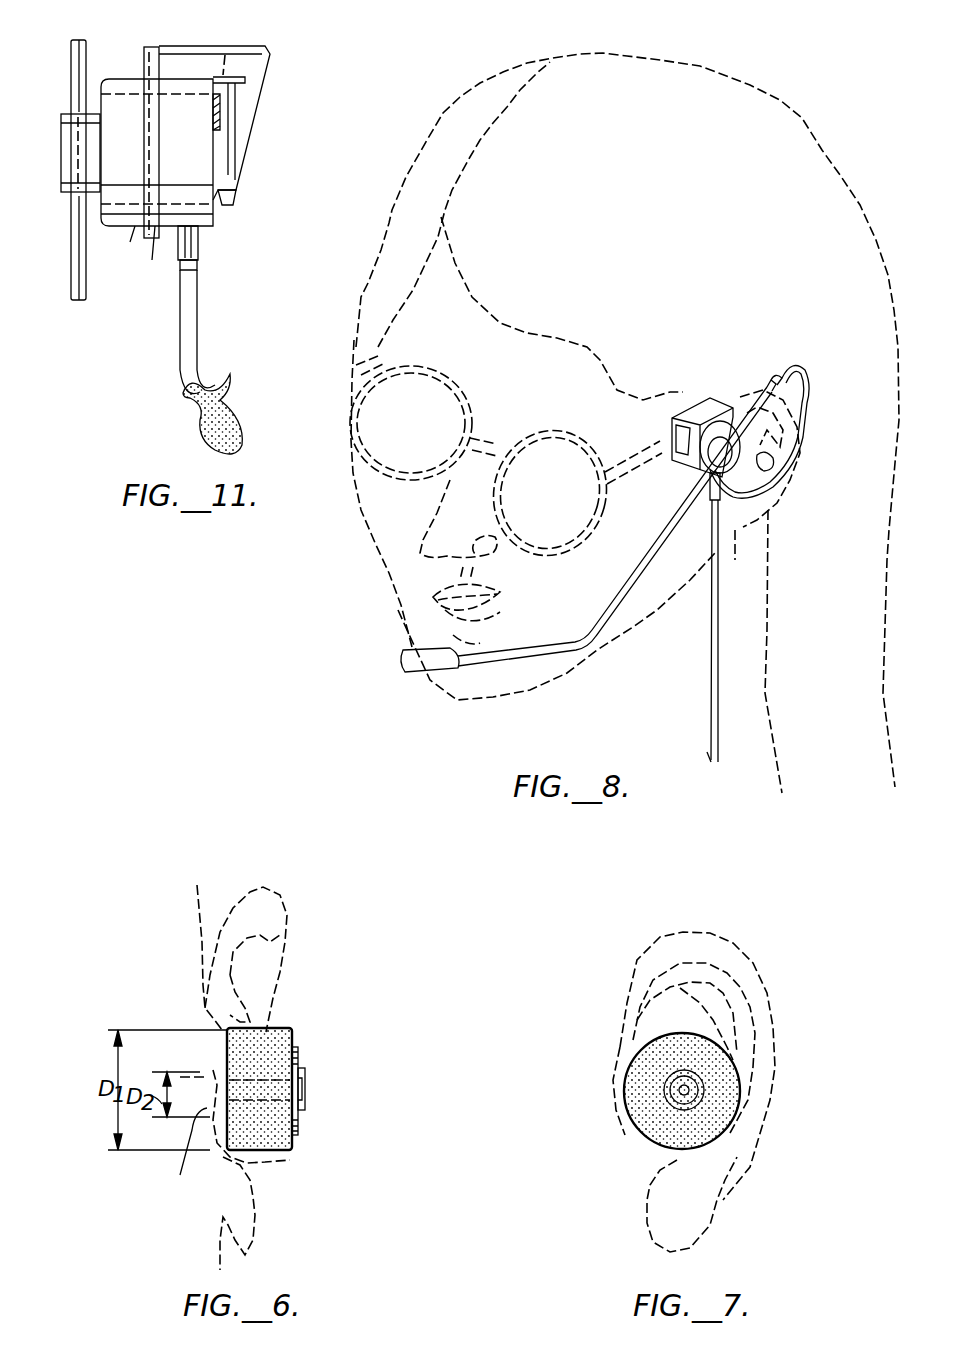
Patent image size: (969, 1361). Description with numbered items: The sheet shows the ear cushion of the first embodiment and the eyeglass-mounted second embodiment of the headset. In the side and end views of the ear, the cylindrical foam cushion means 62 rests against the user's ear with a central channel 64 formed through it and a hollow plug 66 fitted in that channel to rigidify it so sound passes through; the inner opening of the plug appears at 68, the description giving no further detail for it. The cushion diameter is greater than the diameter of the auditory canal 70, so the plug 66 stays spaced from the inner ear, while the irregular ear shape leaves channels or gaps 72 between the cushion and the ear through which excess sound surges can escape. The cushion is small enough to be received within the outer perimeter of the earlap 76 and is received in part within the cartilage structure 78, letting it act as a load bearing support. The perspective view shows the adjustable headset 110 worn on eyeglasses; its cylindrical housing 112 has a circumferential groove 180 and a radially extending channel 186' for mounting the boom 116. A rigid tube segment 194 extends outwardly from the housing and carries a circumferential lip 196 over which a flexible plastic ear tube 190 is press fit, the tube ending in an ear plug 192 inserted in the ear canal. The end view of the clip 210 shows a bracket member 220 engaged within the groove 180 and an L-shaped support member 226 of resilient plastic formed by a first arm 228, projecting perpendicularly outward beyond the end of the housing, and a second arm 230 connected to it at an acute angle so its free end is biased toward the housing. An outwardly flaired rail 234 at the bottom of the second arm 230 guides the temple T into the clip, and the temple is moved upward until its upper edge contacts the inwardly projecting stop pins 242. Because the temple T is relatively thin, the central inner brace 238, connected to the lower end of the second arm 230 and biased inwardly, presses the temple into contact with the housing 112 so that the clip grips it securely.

In FIG. 6, the cushion means 62 is at (288, 1030).
In FIG. 7, the cushion means 62 is at (637, 1062).
In FIG. 6, the central channel 64 is at (306, 1088).
In FIG. 6, the hollow plug 66 is at (299, 1057).
In FIG. 7, the hollow plug 66 is at (667, 1093).
In FIG. 6, the sound port 68 is at (303, 1104).
In FIG. 7, the sound port 68 is at (672, 1098).
In FIG. 6, the auditory canal 70 is at (180, 1172).
In FIG. 6, the channels or gaps 72 is at (205, 1008).
In FIG. 6, the earlap 76 is at (279, 904).
In FIG. 7, the earlap 76 is at (730, 938).
In FIG. 6, the cartilage structure of the ear 78 is at (262, 1160).
In FIG. 7, the cartilage structure of the ear 78 is at (640, 1188).
In FIG. 11, the adjustable headset 110 is at (98, 56).
In FIG. 8, the adjustable headset 110 is at (740, 370).
In FIG. 11, the housing 112 is at (128, 235).
In FIG. 8, the housing 112 is at (725, 510).
In FIG. 11, the boom 116 is at (76, 273).
In FIG. 8, the boom 116 is at (553, 660).
In FIG. 11, the circumferential groove 180 is at (148, 262).
In FIG. 11, the radially extending channel 186' is at (63, 168).
In FIG. 11, the ear tube 190 is at (195, 305).
In FIG. 8, the ear tube 190 is at (760, 493).
In FIG. 11, the ear plug 192 is at (243, 425).
In FIG. 8, the ear plug 192 is at (774, 463).
In FIG. 11, the rigid tube segment 194 is at (199, 236).
In FIG. 11, the circumferential lip 196 is at (198, 268).
In FIG. 11, the clip 210 is at (232, 36).
In FIG. 8, the clip 210 is at (690, 408).
In FIG. 11, the bracket member 220 is at (150, 155).
In FIG. 11, the L-shaped support member 226 is at (265, 52).
In FIG. 11, the first arm 228 is at (188, 62).
In FIG. 11, the second arm 230 is at (236, 118).
In FIG. 11, the outwardly flaired rail 234 is at (240, 195).
In FIG. 11, the central inner brace 238 is at (230, 100).
In FIG. 11, the stop pins 242 is at (225, 82).
In FIG. 11, the temple T is at (221, 125).